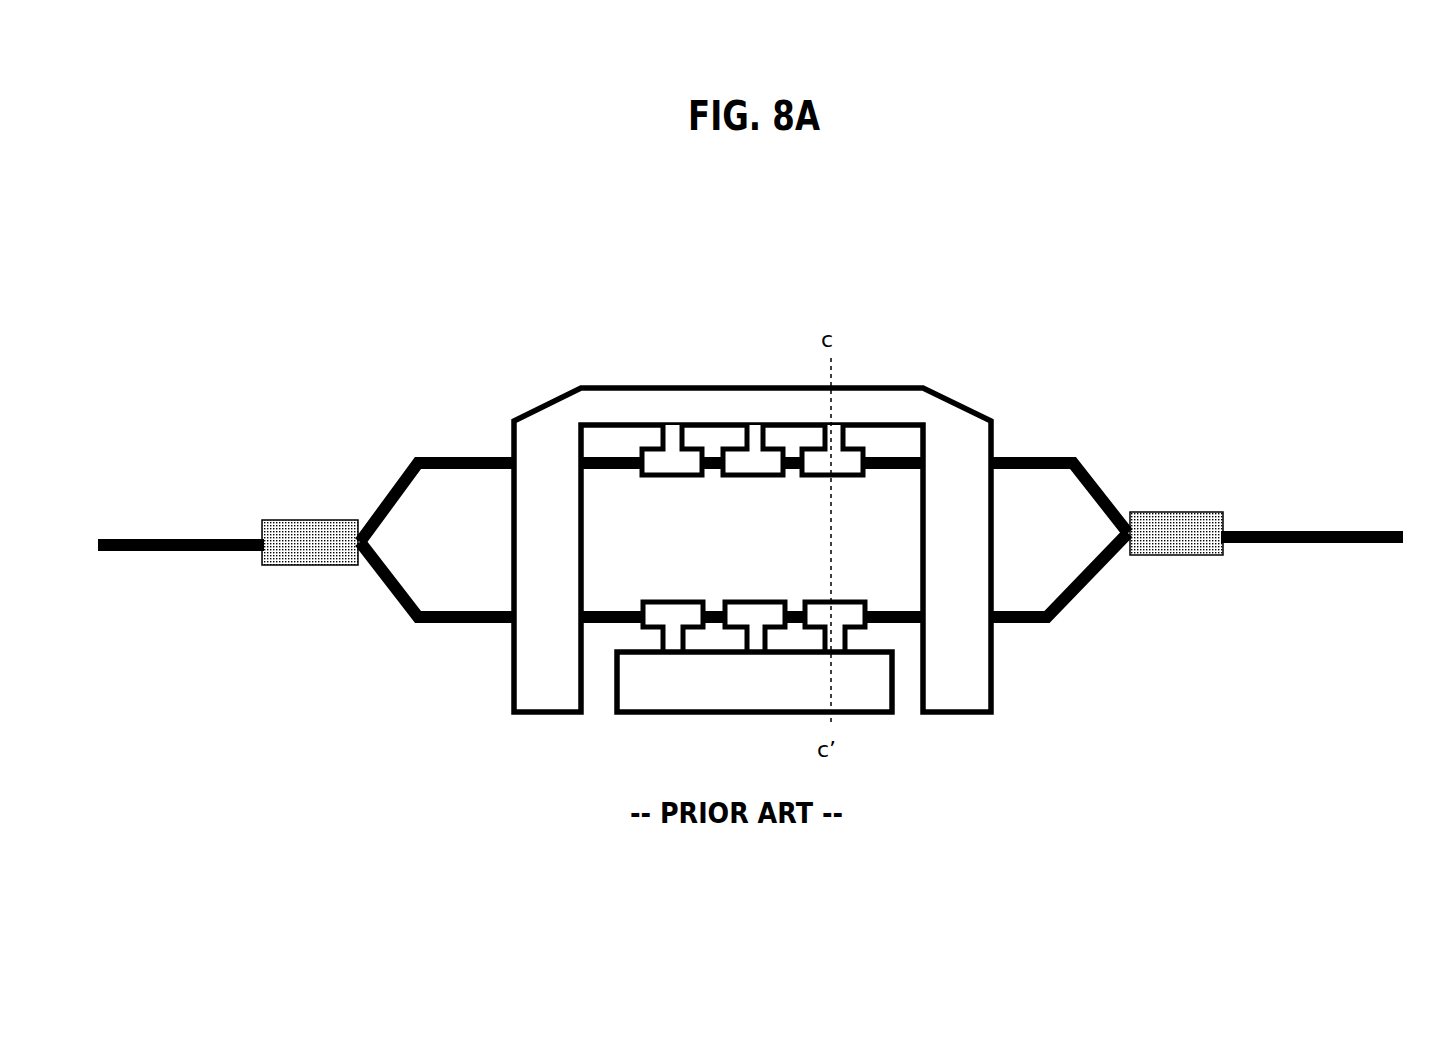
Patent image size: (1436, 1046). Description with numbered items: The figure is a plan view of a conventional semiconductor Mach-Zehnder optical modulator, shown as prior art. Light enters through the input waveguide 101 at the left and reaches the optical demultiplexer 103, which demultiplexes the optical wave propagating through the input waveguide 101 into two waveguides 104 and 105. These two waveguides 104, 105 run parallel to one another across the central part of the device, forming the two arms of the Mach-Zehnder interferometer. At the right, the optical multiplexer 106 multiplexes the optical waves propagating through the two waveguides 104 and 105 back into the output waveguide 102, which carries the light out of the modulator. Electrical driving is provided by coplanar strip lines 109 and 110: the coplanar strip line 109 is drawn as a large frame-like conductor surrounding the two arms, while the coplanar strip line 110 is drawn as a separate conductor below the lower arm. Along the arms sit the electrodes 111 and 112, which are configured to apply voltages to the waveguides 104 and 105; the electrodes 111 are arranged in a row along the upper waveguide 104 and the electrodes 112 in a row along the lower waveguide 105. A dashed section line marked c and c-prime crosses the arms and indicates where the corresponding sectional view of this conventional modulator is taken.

The input waveguide 101 is at (128, 538).
The output waveguide 102 is at (1313, 530).
The optical demultiplexer 103 is at (282, 518).
The waveguide 104 is at (437, 455).
The waveguide 105 is at (430, 627).
The optical multiplexer 106 is at (1167, 508).
The coplanar strip line 109 is at (947, 423).
The coplanar strip line 110 is at (693, 682).
The electrode 111 is at (820, 462).
The electrode 112 is at (817, 610).